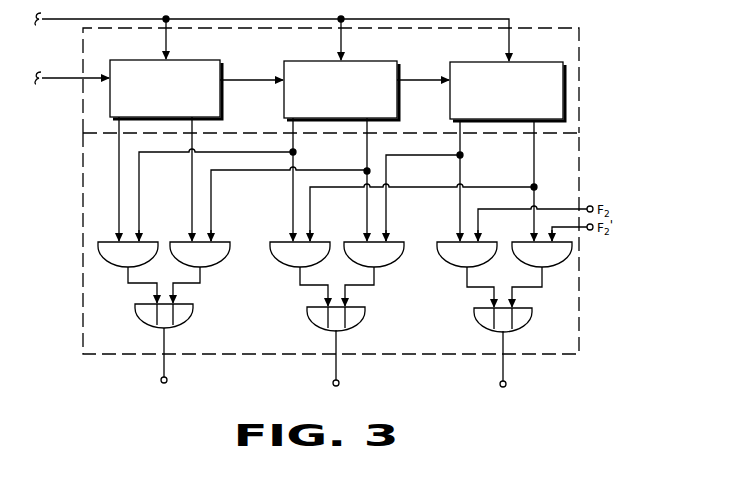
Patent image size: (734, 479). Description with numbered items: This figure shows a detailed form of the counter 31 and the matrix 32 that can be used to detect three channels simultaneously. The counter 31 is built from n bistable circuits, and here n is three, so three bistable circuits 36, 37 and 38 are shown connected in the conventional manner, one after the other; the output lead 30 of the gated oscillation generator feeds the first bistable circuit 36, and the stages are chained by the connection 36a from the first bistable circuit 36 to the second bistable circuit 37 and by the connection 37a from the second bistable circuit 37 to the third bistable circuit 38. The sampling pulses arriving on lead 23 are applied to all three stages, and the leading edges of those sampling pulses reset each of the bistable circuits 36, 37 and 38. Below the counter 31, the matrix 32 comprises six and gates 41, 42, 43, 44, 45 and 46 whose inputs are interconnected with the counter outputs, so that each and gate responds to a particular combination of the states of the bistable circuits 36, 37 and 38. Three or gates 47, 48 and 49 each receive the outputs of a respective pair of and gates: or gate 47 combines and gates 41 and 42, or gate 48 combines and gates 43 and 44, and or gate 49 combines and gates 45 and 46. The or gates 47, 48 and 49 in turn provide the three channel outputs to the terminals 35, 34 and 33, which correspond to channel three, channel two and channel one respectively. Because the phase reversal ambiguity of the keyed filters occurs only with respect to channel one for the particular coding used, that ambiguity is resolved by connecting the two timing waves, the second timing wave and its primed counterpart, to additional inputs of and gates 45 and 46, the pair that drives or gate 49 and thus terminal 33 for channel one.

The lead 23 is at (311, 18).
The output lead 30 is at (72, 80).
The counter 31 is at (492, 51).
The matrix 32 is at (262, 343).
The terminal 33 is at (500, 382).
The terminal 34 is at (333, 381).
The terminal 35 is at (161, 378).
The bistable circuit 36 is at (152, 105).
The bistable output connection 36a is at (251, 92).
The bistable circuit 37 is at (328, 106).
The bistable output connection 37a is at (423, 92).
The bistable circuit 38 is at (494, 107).
The and gate 41 is at (128, 254).
The and gate 42 is at (200, 254).
The and gate 43 is at (300, 254).
The and gate 44 is at (374, 254).
The and gate 45 is at (467, 254).
The and gate 46 is at (542, 254).
The or gate 47 is at (137, 312).
The or gate 48 is at (362, 317).
The or gate 49 is at (477, 316).